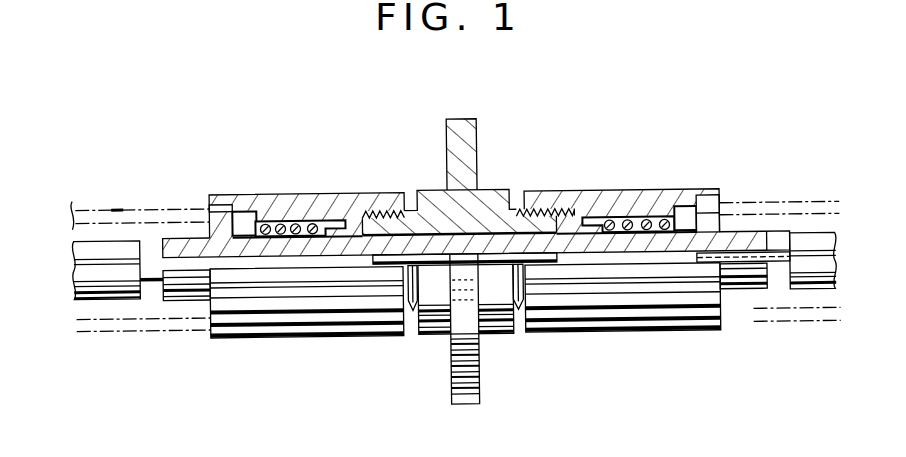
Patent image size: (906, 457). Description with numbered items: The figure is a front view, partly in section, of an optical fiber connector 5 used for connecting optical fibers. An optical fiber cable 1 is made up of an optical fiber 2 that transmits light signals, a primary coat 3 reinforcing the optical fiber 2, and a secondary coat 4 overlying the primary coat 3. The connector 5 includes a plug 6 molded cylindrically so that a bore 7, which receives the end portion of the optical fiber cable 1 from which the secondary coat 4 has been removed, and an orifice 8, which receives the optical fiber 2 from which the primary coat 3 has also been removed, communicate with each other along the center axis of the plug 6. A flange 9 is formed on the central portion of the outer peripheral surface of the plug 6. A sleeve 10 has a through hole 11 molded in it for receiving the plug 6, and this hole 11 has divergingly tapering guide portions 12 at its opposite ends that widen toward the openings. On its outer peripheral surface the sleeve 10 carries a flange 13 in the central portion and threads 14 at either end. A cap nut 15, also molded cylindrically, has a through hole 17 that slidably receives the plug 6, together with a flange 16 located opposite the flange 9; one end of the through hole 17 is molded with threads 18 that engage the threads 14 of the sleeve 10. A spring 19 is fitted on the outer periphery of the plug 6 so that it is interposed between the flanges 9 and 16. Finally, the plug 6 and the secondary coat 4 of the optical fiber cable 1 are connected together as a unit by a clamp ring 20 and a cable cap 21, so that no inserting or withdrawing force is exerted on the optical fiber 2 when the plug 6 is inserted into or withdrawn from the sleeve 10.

The optical fiber cable 1 is at (127, 236).
The optical fiber 2 is at (395, 262).
The primary coat 3 is at (153, 283).
The secondary coat 4 is at (112, 290).
The optical fiber connector 5 is at (385, 183).
The plug 6 is at (178, 300).
The bore 7 is at (706, 269).
The orifice 8 is at (491, 266).
The flange 9 is at (593, 227).
The sleeve 10 is at (430, 338).
The through hole 11 is at (444, 240).
The guide portions 12 is at (372, 258).
The flange 13 is at (479, 366).
The threads 14 is at (412, 212).
The cap nut 15 is at (262, 330).
The flange 16 is at (233, 227).
The through hole 17 is at (285, 221).
The threads 18 is at (358, 216).
The spring 19 is at (632, 224).
The clamp ring 20 is at (85, 206).
The cable cap 21 is at (117, 210).